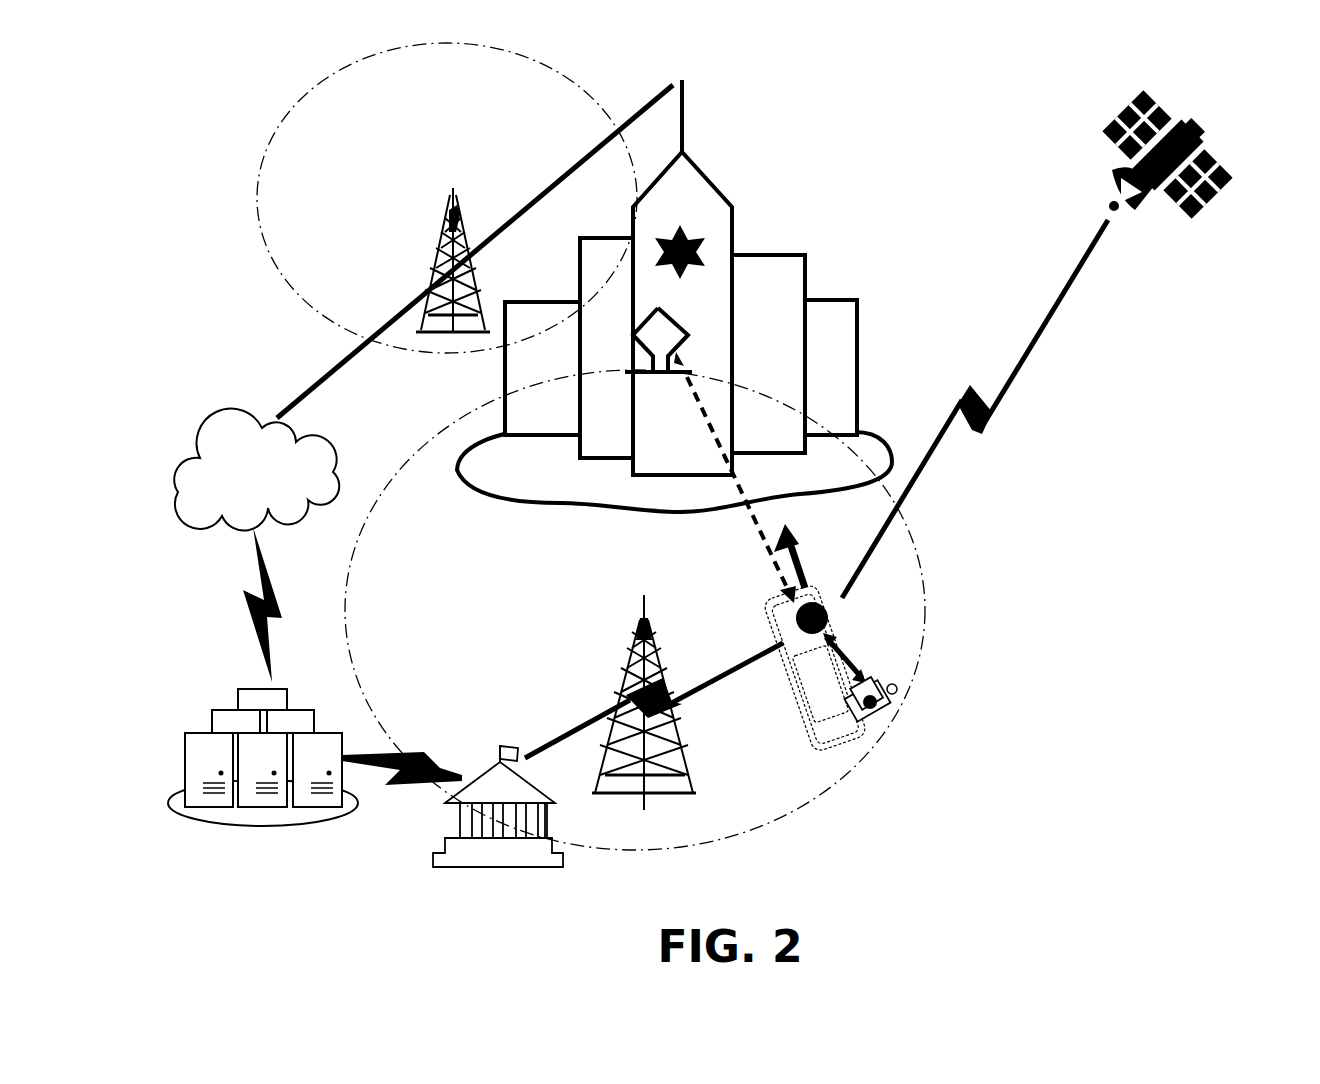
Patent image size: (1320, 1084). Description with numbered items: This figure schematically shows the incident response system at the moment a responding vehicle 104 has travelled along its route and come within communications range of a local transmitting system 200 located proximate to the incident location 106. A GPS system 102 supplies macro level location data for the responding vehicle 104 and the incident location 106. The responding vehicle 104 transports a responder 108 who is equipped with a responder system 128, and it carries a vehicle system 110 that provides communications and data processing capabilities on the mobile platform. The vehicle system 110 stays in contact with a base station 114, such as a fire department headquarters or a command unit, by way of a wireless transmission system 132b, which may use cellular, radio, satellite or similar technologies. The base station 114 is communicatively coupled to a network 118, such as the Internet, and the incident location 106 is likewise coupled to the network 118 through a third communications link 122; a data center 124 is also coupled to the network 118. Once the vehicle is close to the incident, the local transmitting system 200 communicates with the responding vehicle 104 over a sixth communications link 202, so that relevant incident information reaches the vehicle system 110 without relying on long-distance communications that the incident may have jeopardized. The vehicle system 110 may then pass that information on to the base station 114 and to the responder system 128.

The GPS system 102 is at (1150, 183).
The responding vehicle 104 is at (843, 618).
The incident location 106 is at (693, 252).
The responder 108 is at (897, 687).
The vehicle system 110 is at (798, 615).
The base station 114 is at (453, 855).
The network 118 is at (243, 443).
The third communications link 122 is at (347, 350).
The data center 124 is at (250, 693).
The responder system 128 is at (893, 707).
The wireless transmission system 132b is at (635, 643).
The local transmitting system 200 is at (648, 337).
The sixth communications link 202 is at (737, 490).